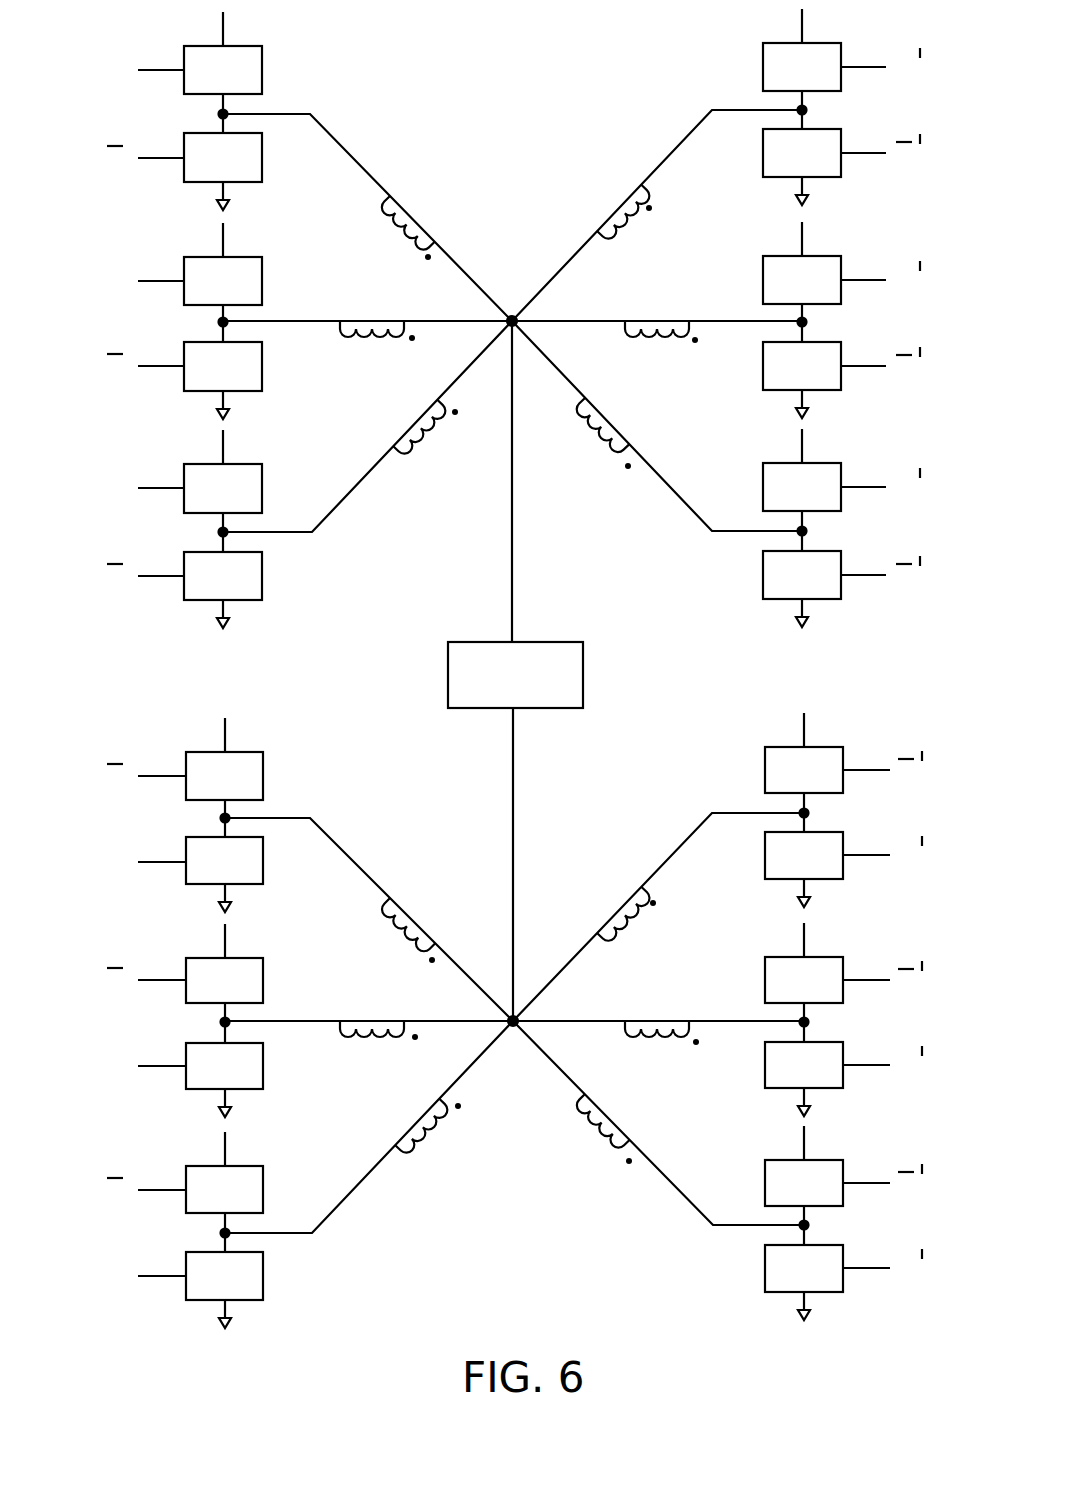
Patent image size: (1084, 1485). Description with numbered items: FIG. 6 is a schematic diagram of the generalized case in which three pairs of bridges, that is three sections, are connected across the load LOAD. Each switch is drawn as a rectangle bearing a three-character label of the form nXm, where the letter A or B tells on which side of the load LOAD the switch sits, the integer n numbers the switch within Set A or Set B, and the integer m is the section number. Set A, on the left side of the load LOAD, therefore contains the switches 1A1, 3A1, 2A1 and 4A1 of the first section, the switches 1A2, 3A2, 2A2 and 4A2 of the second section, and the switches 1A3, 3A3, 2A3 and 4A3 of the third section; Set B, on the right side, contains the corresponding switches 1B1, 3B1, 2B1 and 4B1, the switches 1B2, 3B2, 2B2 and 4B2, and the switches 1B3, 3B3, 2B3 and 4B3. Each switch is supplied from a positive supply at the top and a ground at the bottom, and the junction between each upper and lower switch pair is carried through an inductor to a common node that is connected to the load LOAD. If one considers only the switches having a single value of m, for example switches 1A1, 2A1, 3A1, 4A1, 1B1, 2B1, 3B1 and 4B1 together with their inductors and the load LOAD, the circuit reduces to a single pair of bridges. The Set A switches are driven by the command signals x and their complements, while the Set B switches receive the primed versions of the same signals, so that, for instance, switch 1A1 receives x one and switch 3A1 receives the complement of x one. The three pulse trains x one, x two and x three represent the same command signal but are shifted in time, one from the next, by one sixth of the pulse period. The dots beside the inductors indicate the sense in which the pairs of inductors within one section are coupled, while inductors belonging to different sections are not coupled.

The switch 1A1 is at (184, 72).
The switch 3A1 is at (184, 171).
The switch 1A2 is at (184, 282).
The switch 3A2 is at (184, 380).
The switch 1A3 is at (184, 491).
The switch 3A3 is at (184, 590).
The switch 1B1 is at (843, 69).
The switch 3B1 is at (843, 167).
The switch 1B2 is at (843, 282).
The switch 3B2 is at (843, 380).
The switch 1B3 is at (843, 490).
The switch 3B3 is at (843, 589).
The switch 2A1 is at (184, 777).
The switch 4A1 is at (184, 874).
The switch 2A2 is at (184, 983).
The switch 4A2 is at (184, 1080).
The switch 2A3 is at (184, 1192).
The switch 4A3 is at (184, 1290).
The switch 2B1 is at (845, 772).
The switch 4B1 is at (845, 869).
The switch 2B2 is at (845, 982).
The switch 4B2 is at (845, 1079).
The switch 2B3 is at (845, 1185).
The switch 4B3 is at (845, 1282).
The load LOAD is at (515, 675).